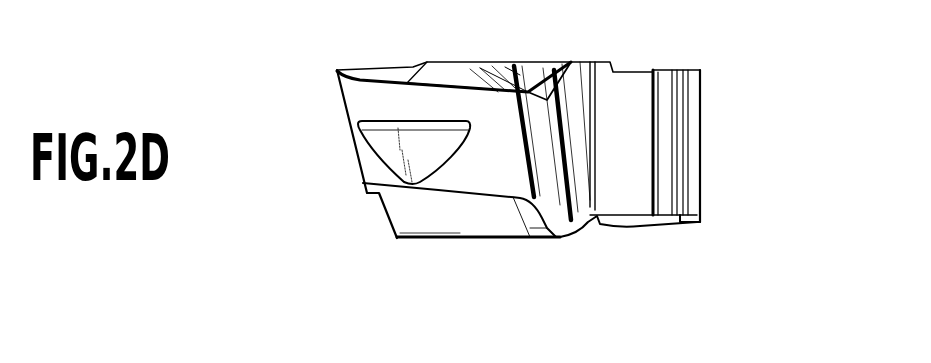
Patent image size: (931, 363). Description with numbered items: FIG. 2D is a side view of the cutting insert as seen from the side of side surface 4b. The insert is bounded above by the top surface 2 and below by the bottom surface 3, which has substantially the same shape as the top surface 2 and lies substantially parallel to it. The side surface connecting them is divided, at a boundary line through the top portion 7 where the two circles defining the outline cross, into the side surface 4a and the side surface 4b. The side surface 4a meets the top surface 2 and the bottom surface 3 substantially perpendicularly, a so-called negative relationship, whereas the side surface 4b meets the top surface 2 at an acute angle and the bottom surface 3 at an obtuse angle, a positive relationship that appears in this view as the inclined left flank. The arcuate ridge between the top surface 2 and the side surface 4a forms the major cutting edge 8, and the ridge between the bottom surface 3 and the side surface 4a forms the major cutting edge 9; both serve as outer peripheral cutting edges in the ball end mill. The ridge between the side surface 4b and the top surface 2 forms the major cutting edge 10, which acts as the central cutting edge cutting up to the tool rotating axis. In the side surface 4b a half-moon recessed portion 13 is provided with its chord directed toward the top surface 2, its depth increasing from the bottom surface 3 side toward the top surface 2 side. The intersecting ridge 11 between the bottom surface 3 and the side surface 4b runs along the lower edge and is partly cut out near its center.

The top surface 2 is at (532, 63).
The bottom surface 3 is at (513, 243).
The side surface 4a is at (702, 143).
The side surface 4b is at (350, 123).
The top portion 7 is at (505, 67).
The major cutting edge 8 is at (700, 70).
The major cutting edge 9 is at (693, 225).
The major cutting edge 10 is at (337, 71).
The intersecting ridge 11 is at (397, 242).
The recessed portion 13 is at (402, 167).